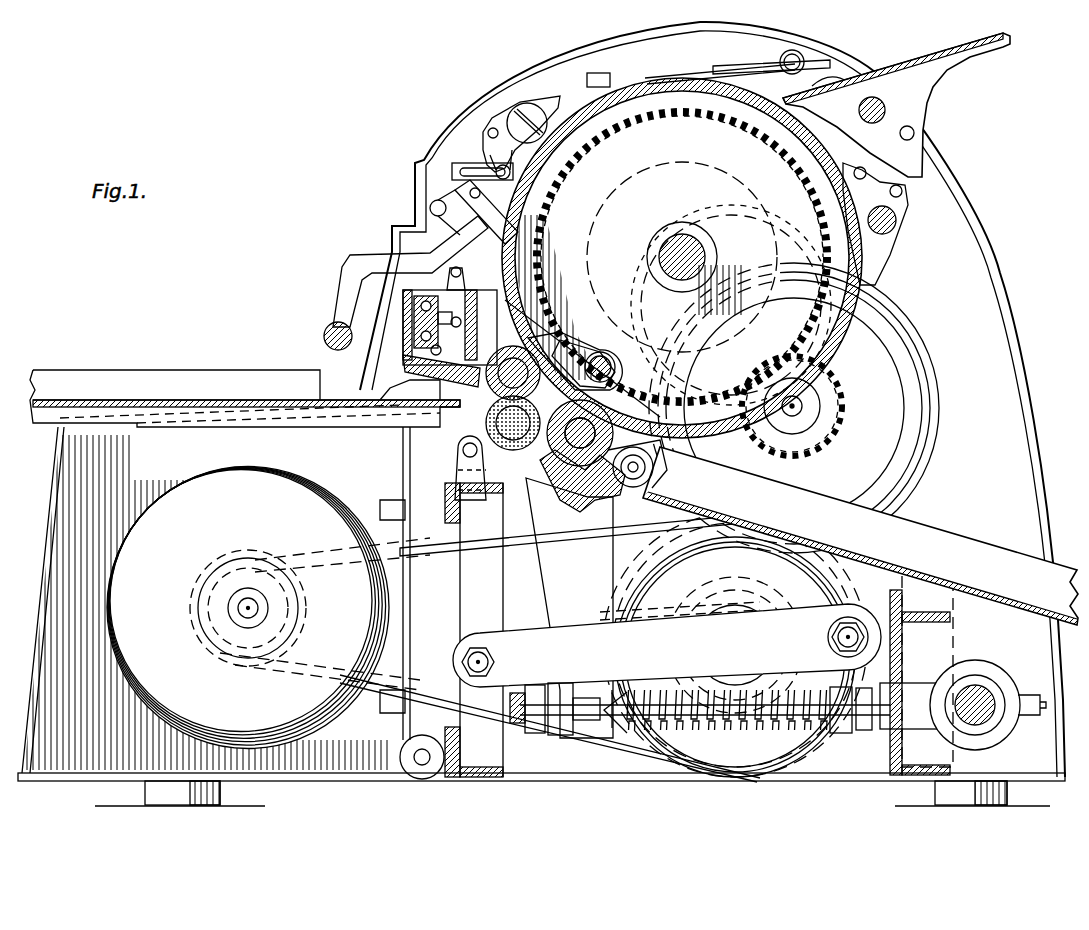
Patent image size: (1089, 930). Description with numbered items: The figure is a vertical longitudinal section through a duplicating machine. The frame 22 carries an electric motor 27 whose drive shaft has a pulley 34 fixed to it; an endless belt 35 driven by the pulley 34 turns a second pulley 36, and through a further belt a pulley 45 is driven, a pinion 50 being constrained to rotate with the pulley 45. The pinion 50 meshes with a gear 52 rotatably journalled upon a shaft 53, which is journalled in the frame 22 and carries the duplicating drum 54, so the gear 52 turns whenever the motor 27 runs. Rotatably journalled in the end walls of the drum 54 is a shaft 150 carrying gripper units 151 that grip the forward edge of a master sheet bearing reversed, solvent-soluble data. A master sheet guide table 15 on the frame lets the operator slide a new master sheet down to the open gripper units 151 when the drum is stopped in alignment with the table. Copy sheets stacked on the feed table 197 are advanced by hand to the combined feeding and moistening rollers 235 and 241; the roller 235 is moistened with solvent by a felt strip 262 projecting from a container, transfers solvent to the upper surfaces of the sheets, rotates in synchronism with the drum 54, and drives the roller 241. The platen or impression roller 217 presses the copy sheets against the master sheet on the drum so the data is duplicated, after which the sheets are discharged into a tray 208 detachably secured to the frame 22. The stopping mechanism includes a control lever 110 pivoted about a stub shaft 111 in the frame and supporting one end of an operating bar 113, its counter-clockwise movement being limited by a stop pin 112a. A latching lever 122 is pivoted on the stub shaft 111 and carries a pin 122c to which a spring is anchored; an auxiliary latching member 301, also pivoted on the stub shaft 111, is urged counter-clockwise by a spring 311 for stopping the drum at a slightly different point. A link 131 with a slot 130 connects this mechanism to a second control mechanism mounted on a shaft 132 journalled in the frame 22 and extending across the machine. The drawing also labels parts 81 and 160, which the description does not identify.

The master sheet guide table 15 is at (950, 48).
The frame 22 is at (985, 214).
The electric motor 27 is at (292, 472).
The pulley 34 is at (302, 592).
The endless belt 35 is at (494, 538).
The second pulley 36 is at (626, 554).
The pulley 45 is at (930, 388).
The pinion 50 is at (840, 396).
The gear 52 is at (777, 246).
The shaft 53 is at (686, 236).
The duplicating drum 54 is at (792, 96).
The gear disc 81 is at (689, 257).
The control lever 110 is at (344, 264).
The stub shaft 111 is at (521, 116).
The stop pin 112a is at (432, 206).
The operating bar 113 is at (327, 328).
The latching lever 122 is at (546, 100).
The pin 122c is at (493, 158).
The slot 130 is at (460, 164).
The link 131 is at (456, 173).
The shaft 132 is at (911, 226).
The shaft 150 is at (613, 362).
The gripper units 151 is at (606, 348).
The feed block 160 is at (452, 296).
The feed table 197 is at (187, 398).
The tray 208 is at (968, 540).
The platen or impression roller 217 is at (579, 406).
The combined feeding and moistening roller 235 is at (566, 336).
The combined feeding and moistening roller 241 is at (476, 416).
The felt strip 262 is at (428, 386).
The auxiliary latching member 301 is at (691, 68).
The spring 311 is at (742, 66).